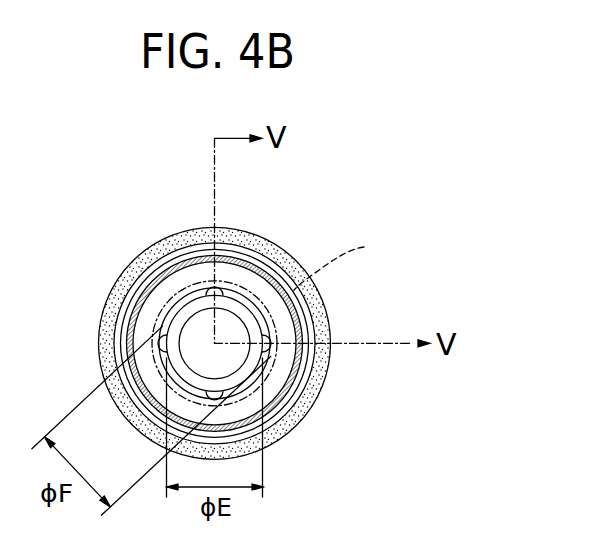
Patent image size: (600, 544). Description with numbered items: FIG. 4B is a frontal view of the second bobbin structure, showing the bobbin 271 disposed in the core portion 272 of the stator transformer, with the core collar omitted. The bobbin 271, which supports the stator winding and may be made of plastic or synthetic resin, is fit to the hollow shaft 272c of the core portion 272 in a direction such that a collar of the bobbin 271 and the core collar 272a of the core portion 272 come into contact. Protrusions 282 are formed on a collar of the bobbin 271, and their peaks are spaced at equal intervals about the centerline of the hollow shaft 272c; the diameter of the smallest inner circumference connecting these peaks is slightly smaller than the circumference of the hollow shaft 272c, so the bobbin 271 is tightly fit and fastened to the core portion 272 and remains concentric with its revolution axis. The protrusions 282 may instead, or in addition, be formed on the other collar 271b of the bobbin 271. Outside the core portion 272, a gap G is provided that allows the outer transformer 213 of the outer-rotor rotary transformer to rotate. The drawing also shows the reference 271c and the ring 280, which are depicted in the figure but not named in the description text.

The outer transformer 213 is at (127, 268).
The bobbin 271 is at (299, 352).
The other collar 271b is at (280, 358).
The hidden edge portion 271c is at (346, 255).
The core portion 272 is at (178, 298).
The core collar 272a is at (259, 295).
The hollow shaft 272c is at (268, 373).
The bearing ring 280 is at (160, 267).
The protrusions 282 is at (221, 285).
The gap G is at (177, 252).